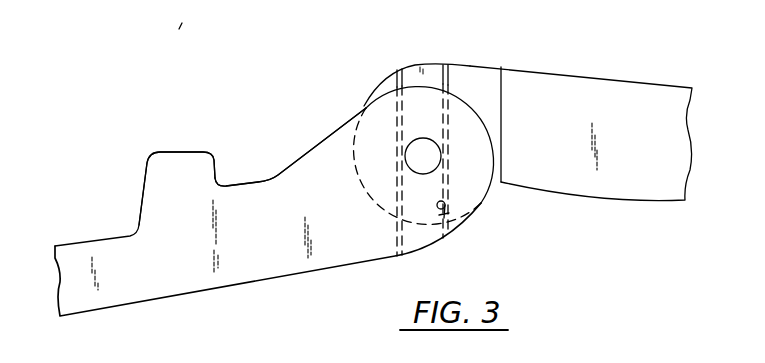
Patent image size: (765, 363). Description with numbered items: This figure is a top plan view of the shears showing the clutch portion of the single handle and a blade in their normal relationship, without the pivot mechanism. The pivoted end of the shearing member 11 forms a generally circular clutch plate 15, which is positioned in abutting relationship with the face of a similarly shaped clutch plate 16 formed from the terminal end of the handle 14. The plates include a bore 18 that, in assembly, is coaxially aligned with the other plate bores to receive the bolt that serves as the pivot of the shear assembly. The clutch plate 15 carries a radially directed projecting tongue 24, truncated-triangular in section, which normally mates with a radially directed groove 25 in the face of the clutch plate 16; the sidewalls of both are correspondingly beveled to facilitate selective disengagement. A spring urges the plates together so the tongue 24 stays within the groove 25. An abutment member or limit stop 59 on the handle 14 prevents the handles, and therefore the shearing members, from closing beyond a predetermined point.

The shearing member 11 is at (626, 56).
The handle 14 is at (279, 153).
The clutch plate 15 is at (463, 28).
The clutch plate 16 is at (310, 243).
The bore 18 is at (437, 167).
The tongue 24 is at (456, 74).
The groove 25 is at (455, 226).
The limit stop 59 is at (190, 118).